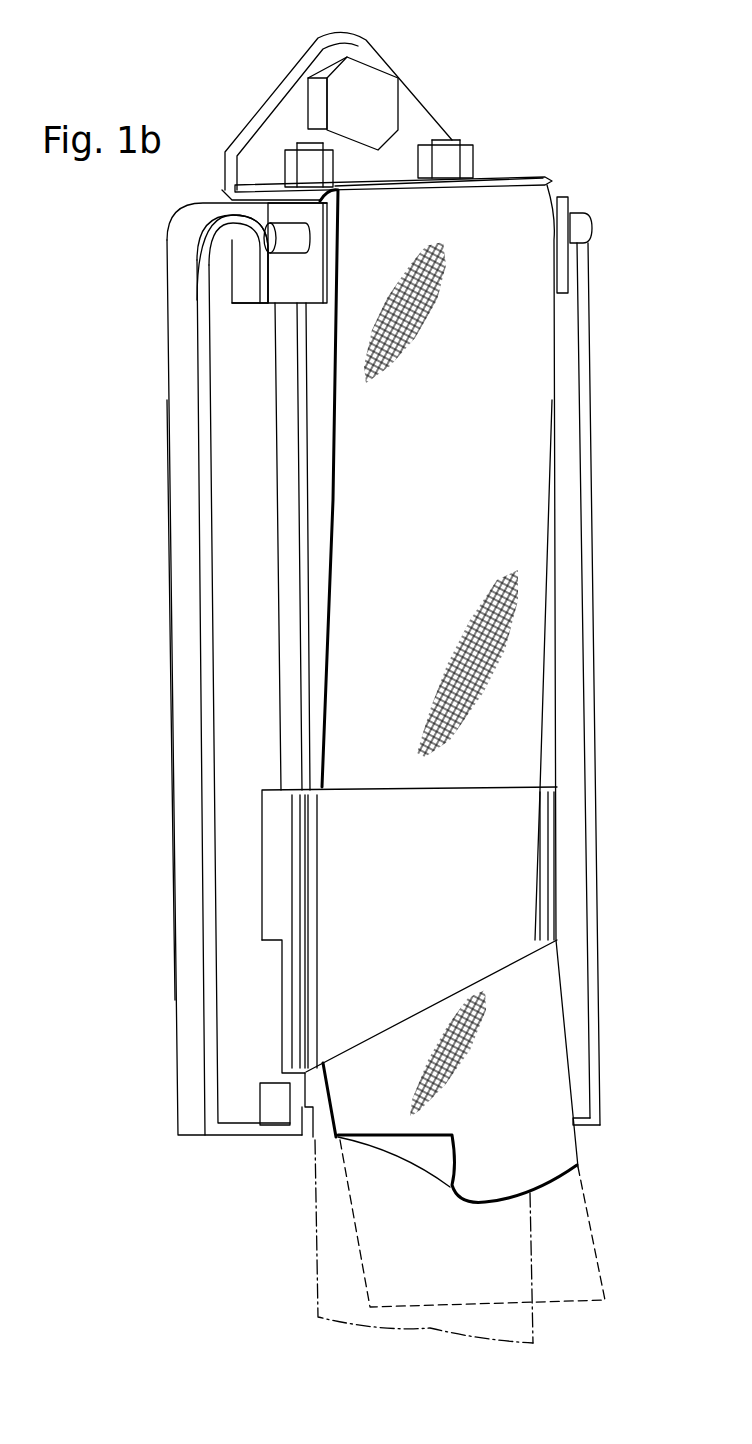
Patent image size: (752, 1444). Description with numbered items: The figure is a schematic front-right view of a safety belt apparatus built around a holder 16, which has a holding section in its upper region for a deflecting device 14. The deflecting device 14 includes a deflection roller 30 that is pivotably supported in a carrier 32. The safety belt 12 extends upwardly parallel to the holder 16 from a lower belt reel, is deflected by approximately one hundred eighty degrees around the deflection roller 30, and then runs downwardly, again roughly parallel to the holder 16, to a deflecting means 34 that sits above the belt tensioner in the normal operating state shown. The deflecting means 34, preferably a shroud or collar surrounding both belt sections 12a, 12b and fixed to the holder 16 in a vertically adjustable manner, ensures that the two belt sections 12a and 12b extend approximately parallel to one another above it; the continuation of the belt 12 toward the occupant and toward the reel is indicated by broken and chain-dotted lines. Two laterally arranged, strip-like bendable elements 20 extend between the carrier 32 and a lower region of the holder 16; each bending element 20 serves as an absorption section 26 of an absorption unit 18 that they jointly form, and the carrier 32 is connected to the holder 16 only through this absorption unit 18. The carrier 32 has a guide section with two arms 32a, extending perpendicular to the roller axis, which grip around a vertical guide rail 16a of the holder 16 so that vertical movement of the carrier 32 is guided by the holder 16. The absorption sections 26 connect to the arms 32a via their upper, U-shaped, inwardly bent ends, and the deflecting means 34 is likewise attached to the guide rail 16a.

The safety belt 12 is at (438, 760).
The belt section 12a is at (316, 398).
The belt section 12b is at (537, 437).
The deflecting device 14 is at (537, 168).
The holder 16 is at (287, 105).
The guide rail 16a is at (288, 676).
The absorption unit 18 is at (184, 490).
The strip-like bendable element 20 is at (185, 607).
The absorption section 26 is at (568, 618).
The deflection roller 30 is at (583, 229).
The carrier 32 is at (262, 272).
The arm 32a is at (288, 296).
The deflecting means 34 is at (533, 873).